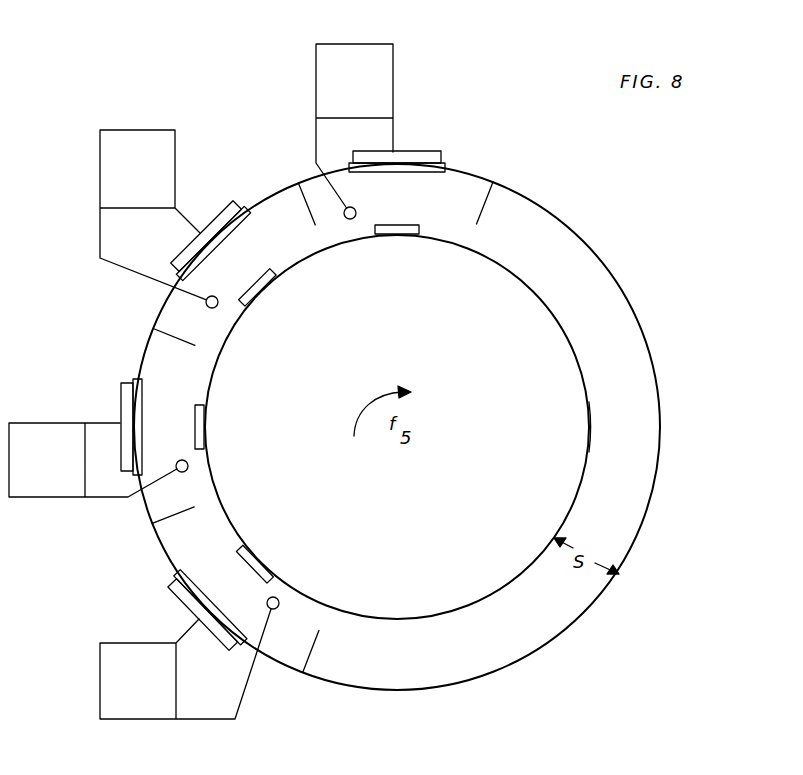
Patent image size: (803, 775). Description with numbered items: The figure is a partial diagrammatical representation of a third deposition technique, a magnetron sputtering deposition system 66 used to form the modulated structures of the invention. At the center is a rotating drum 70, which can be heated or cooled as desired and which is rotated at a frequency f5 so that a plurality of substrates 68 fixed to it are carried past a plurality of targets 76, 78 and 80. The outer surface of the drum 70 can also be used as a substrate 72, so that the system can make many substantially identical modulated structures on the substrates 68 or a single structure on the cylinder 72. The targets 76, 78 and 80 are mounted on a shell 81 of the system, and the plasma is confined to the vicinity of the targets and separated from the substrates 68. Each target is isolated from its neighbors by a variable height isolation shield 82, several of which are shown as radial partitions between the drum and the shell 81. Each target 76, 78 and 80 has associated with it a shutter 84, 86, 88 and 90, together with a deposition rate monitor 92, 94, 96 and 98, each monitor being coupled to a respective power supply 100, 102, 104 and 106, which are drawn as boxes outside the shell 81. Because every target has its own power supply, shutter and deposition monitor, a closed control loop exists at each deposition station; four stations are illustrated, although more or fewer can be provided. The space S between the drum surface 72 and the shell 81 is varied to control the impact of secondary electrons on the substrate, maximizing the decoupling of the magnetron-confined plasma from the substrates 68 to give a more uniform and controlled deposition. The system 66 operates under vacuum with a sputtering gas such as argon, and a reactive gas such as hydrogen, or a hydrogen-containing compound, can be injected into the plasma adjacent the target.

The deposition system 66 is at (437, 427).
The substrates 68 is at (410, 234).
The rotating drum 70 is at (413, 511).
The substrate / drum surface 72 is at (588, 436).
The target 76 is at (133, 417).
The target 78 is at (220, 224).
The target 80 is at (415, 150).
The shell 81 is at (652, 502).
The variable height isolation shield 82 is at (297, 184).
The shutter 84 is at (208, 590).
The shutter 86 is at (142, 399).
The shutter 88 is at (240, 218).
The shutter 90 is at (406, 173).
The deposition rate monitor 92 is at (282, 596).
The deposition rate monitor 94 is at (190, 464).
The deposition rate monitor 96 is at (222, 310).
The deposition rate monitor 98 is at (352, 220).
The power supply 100 is at (157, 691).
The power supply 102 is at (66, 472).
The power supply 104 is at (156, 181).
The power supply 106 is at (374, 93).